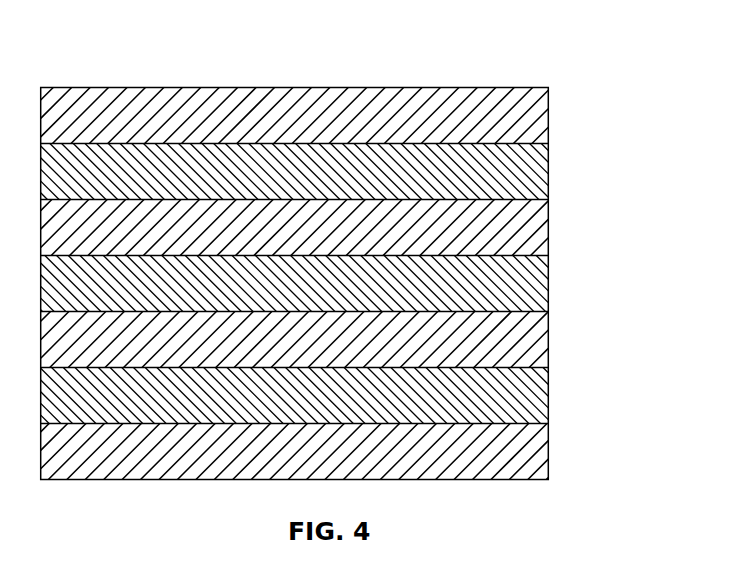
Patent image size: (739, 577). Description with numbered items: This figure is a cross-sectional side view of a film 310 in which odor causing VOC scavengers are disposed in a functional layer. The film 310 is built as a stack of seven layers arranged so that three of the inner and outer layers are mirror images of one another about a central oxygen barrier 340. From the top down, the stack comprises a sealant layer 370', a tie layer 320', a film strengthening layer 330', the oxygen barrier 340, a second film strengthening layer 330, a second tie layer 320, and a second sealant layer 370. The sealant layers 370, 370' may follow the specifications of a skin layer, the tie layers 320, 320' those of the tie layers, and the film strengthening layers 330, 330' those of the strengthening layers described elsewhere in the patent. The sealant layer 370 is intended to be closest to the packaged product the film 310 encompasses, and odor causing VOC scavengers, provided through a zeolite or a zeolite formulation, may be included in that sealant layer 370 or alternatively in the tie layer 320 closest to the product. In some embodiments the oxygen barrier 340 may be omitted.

The film 310 is at (475, 61).
The sealant layer 370' is at (333, 115).
The tie layer 320' is at (333, 169).
The film strengthening layer 330' is at (333, 228).
The oxygen barrier 340 is at (541, 291).
The film strengthening layer 330 is at (333, 339).
The tie layer 320 is at (333, 395).
The sealant layer 370 is at (333, 450).